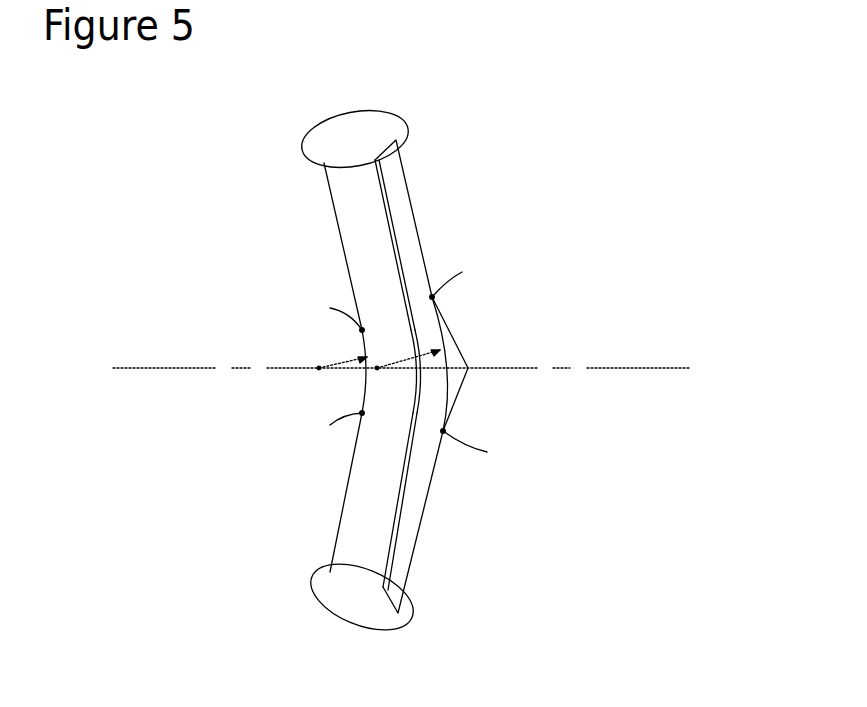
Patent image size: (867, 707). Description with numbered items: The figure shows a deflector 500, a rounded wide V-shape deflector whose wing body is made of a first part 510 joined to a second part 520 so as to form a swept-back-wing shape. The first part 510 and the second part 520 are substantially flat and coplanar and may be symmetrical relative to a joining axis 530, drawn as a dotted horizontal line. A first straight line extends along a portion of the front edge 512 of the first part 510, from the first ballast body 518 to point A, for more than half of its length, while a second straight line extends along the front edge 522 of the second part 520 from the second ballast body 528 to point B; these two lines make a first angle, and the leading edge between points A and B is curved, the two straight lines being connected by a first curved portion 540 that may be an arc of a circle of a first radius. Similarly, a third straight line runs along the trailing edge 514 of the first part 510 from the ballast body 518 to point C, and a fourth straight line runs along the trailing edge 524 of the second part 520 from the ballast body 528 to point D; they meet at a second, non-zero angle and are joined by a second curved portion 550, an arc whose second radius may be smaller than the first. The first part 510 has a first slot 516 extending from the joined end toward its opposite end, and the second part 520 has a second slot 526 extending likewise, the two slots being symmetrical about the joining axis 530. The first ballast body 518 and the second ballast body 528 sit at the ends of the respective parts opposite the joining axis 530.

The deflector 500 is at (527, 103).
The first part 510 is at (357, 212).
The front edge of the first part 512 is at (412, 213).
The trailing edge of the first part 514 is at (343, 243).
The first slot 516 is at (383, 187).
The first ballast body 518 is at (320, 128).
The second part 520 is at (367, 522).
The front edge of the second part 522 is at (427, 508).
The trailing edge of the second part 524 is at (348, 480).
The second slot 526 is at (393, 540).
The second ballast body 528 is at (347, 620).
The joining axis 530 is at (665, 368).
The first curved portion 540 is at (447, 360).
The second curved portion 550 is at (364, 349).